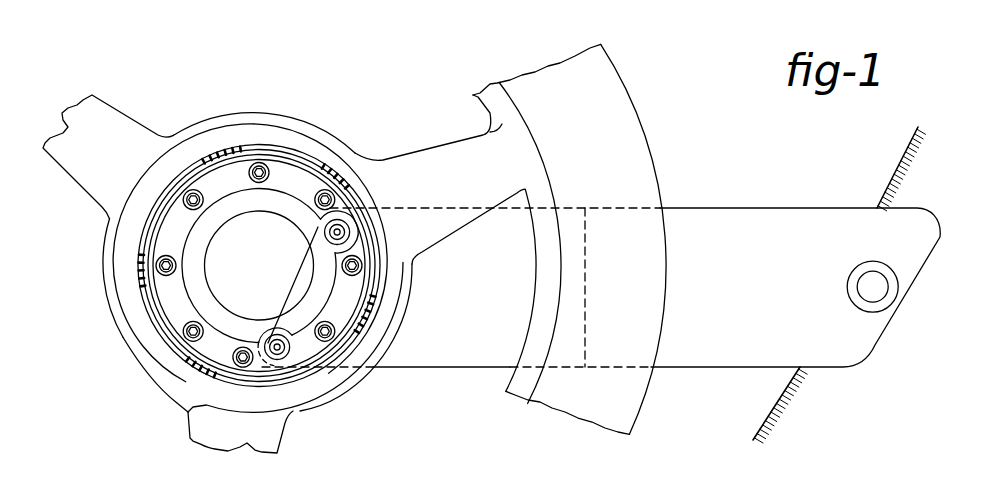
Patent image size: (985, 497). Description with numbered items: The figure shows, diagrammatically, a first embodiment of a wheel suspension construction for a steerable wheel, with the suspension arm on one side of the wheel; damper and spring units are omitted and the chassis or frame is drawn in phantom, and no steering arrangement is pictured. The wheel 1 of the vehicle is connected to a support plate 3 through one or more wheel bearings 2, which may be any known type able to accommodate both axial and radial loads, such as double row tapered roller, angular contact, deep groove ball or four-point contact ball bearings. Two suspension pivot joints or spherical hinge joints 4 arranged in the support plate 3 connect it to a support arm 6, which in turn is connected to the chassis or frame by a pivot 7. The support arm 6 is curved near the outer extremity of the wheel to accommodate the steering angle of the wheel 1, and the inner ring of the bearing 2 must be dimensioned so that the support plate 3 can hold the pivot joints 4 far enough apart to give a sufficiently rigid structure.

The wheel 1 is at (613, 110).
The wheel bearing 2 is at (335, 178).
The support plate 3 is at (172, 305).
The suspension pivot joint 4 is at (277, 341).
The support arm 6 is at (737, 220).
The pivot 7 is at (877, 293).